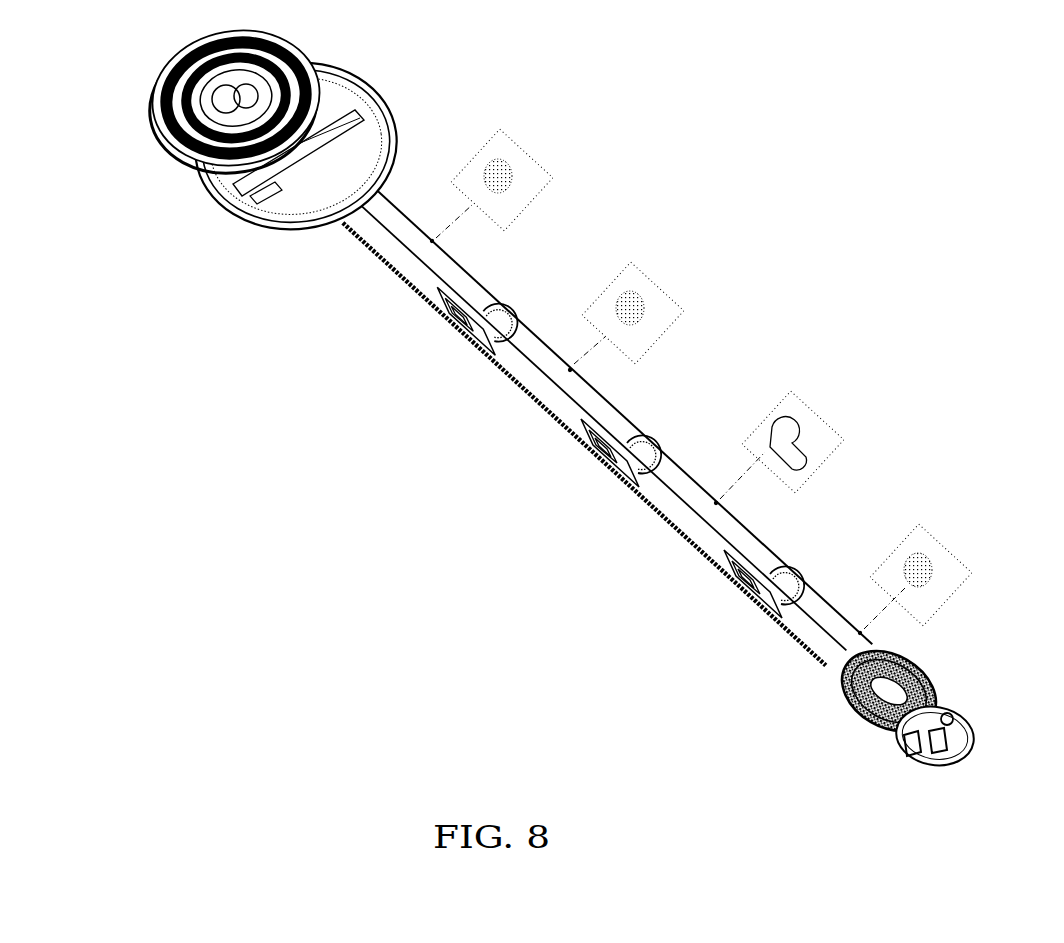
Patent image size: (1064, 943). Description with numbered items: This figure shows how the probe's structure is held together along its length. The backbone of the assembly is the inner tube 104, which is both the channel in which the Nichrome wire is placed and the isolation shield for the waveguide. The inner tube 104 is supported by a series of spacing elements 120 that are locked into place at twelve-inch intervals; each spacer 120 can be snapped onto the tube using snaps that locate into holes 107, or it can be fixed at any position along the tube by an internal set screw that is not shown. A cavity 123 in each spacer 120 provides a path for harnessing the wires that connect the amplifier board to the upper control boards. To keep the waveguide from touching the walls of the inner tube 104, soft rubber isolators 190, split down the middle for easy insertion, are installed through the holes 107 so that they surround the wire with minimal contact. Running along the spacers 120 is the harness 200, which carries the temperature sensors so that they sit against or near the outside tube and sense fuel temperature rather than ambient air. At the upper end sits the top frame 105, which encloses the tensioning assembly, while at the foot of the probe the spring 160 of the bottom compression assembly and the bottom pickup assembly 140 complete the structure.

The inner tube 104 is at (587, 402).
The top frame 105 is at (262, 226).
The holes 107 is at (432, 233).
The spacing elements 120 is at (475, 342).
The cavity 123 is at (448, 328).
The bottom pickup assembly 140 is at (973, 730).
The spring 160 is at (933, 683).
The isolators 190 is at (510, 177).
The harness 200 is at (657, 528).